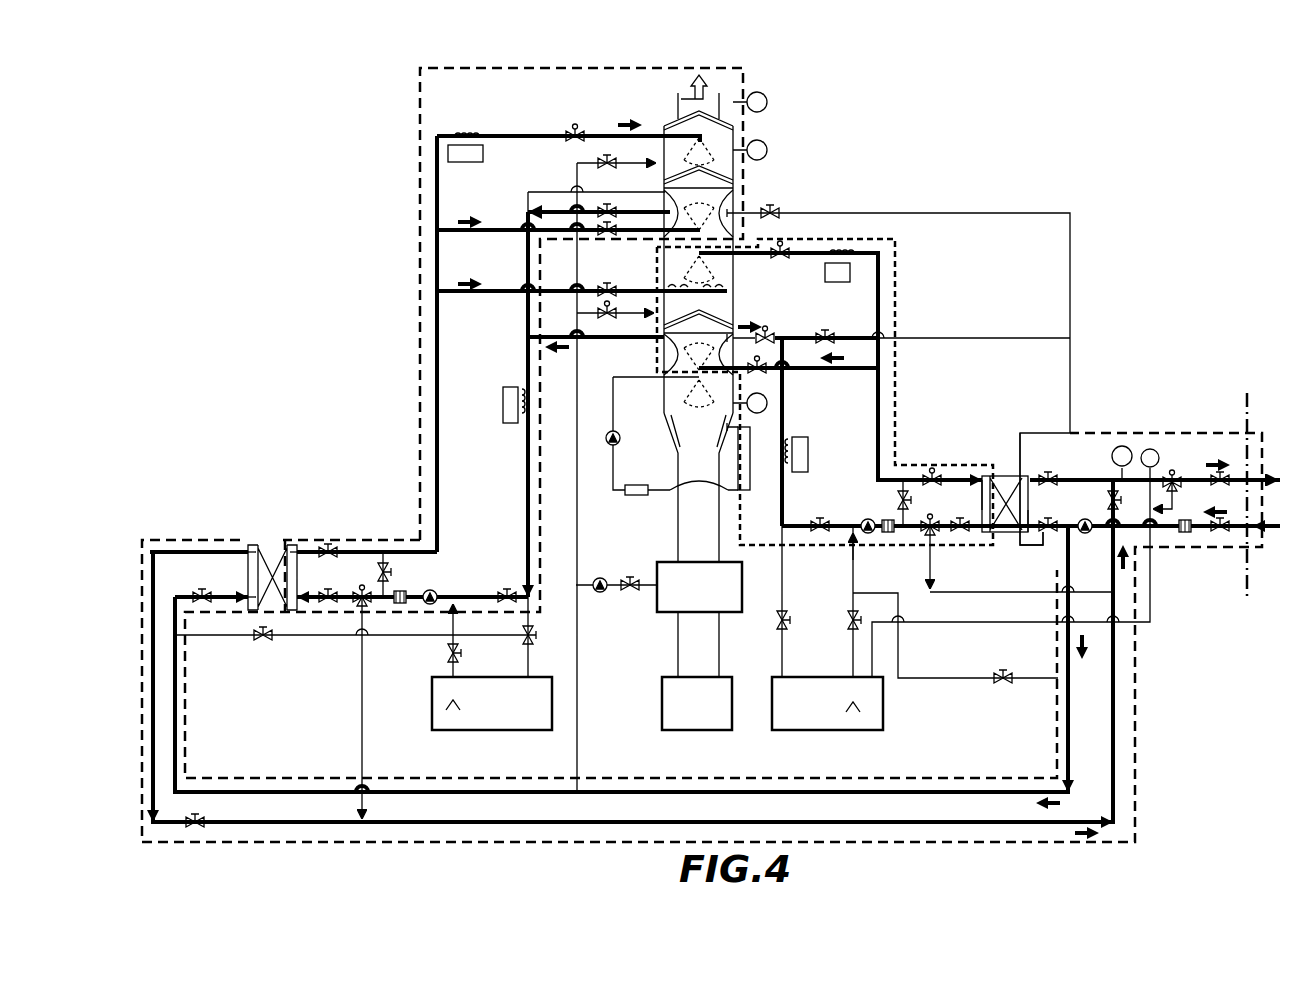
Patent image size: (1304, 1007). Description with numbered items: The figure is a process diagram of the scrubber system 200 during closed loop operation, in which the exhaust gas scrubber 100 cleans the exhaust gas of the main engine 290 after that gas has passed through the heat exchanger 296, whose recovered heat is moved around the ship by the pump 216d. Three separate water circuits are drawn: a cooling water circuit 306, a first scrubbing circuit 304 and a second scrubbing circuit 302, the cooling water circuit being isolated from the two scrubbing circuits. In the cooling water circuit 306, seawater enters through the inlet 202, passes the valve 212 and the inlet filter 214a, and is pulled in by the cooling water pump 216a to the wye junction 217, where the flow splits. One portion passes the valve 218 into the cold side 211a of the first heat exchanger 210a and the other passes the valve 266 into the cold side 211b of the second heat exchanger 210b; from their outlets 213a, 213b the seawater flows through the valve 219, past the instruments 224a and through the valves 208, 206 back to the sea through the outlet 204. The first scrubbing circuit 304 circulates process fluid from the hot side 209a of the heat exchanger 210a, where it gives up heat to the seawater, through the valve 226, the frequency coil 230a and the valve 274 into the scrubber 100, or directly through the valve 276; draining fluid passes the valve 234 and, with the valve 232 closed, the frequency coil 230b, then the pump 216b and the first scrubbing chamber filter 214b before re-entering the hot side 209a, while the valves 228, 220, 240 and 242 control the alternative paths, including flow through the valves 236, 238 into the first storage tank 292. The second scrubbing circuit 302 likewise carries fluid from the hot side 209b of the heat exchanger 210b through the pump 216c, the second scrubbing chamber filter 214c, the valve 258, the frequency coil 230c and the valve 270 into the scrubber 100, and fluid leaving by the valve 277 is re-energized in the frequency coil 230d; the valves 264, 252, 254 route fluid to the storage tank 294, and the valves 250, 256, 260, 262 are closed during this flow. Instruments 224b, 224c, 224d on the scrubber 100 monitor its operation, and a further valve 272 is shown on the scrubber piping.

The scrubber 100 is at (760, 135).
The scrubber system 200 is at (1130, 150).
The inlet 202 is at (1252, 533).
The outlet 204 is at (1258, 485).
The valve 206 is at (1220, 483).
The valve 208 is at (1175, 475).
The hot side of first heat exchanger 209a is at (982, 512).
The hot side of second heat exchanger 209b is at (298, 545).
The first scrubber chamber heat exchanger 210a is at (1003, 476).
The second scrubber chamber heat exchanger 210b is at (272, 545).
The cold side of first heat exchanger 211a is at (1028, 522).
The cold side of second heat exchanger 211b is at (245, 591).
The valve 212 is at (1220, 534).
The outlet of first heat exchanger 213a is at (1028, 453).
The outlet of second heat exchanger 213b is at (248, 549).
The inlet filter 214a is at (1185, 534).
The first scrubbing chamber filter 214b is at (888, 534).
The second scrubbing chamber filter 214c is at (400, 590).
The cooling water pump 216a is at (1110, 503).
The pump 216b is at (866, 521).
The pump 216c is at (433, 595).
The pump 216d is at (600, 592).
The wye junction 217 is at (1048, 548).
The valve 218 is at (1044, 533).
The valve 219 is at (1050, 470).
The valve 220 is at (932, 536).
The instruments 224a is at (1147, 448).
The instrumentation 224b is at (767, 102).
The instrumentation 224c is at (767, 150).
The instrument 224d is at (767, 403).
The valve 226 is at (900, 500).
The valve 228 is at (934, 469).
The frequency coil 230a is at (843, 282).
The frequency coil 230b is at (808, 447).
The frequency coil 230c is at (462, 162).
The frequency coil 230d is at (510, 423).
The valve 232 is at (828, 335).
The valve 234 is at (767, 335).
The valve 236 is at (820, 535).
The valve 238 is at (775, 620).
The valve 240 is at (849, 620).
The valve 242 is at (1005, 679).
The valve 250 is at (448, 653).
The valve 252 is at (507, 590).
The valve 254 is at (524, 637).
The valve 256 is at (331, 547).
The valve 258 is at (376, 572).
The valve 260 is at (367, 605).
The valve 262 is at (328, 603).
The valve 264 is at (263, 635).
The valve 266 is at (203, 602).
The valve 270 is at (572, 128).
The valve 272 is at (774, 210).
The valve 274 is at (782, 247).
The valve 276 is at (767, 372).
The valve 277 is at (610, 206).
The main engine 290 is at (685, 730).
The first storage tank 292 is at (845, 730).
The storage tank 294 is at (531, 730).
The heat exchanger 296 is at (665, 612).
The second scrubbing circuit 302 is at (420, 292).
The first scrubbing circuit 304 is at (900, 388).
The cooling water circuit 306 is at (1135, 700).